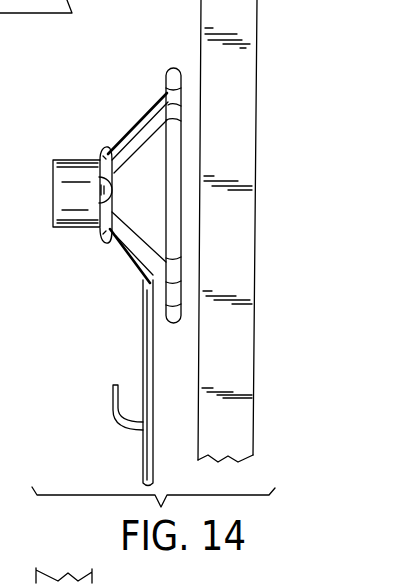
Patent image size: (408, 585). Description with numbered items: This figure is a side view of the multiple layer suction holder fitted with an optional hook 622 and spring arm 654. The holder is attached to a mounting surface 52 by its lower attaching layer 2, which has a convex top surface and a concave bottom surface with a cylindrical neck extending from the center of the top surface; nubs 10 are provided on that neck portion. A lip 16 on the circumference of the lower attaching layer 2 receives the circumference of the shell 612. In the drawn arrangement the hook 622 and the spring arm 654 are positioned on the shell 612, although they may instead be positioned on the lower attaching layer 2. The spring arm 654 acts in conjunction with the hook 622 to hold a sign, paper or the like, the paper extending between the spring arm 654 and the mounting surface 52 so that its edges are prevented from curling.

The lower attaching layer 2 is at (169, 323).
The nubs 10 is at (104, 149).
The lip 16 is at (167, 84).
The mounting surface 52 is at (201, 33).
The shell 612 is at (132, 256).
The hook 622 is at (113, 402).
The spring arm 654 is at (143, 455).